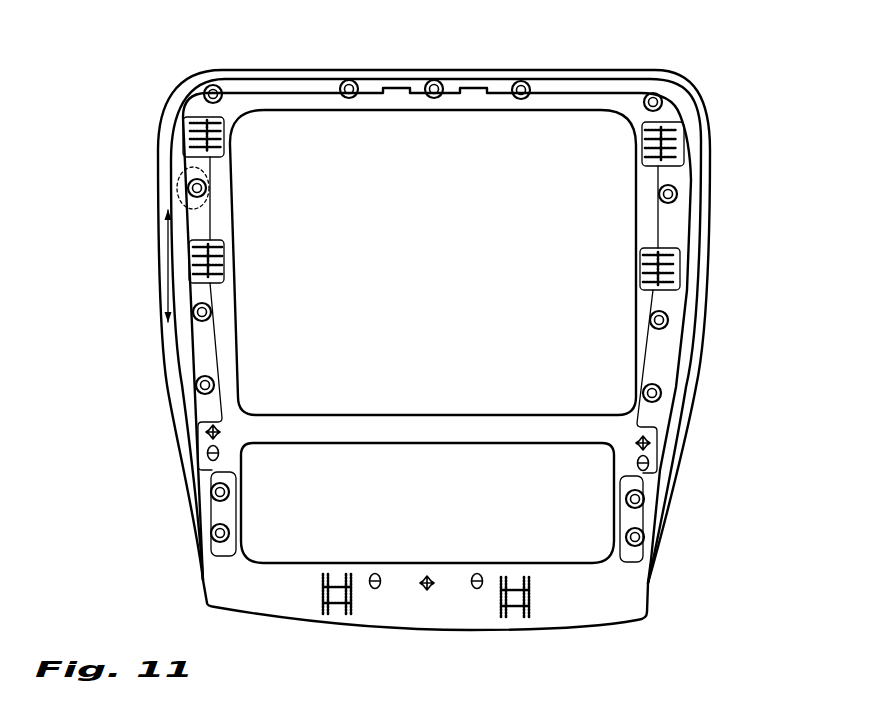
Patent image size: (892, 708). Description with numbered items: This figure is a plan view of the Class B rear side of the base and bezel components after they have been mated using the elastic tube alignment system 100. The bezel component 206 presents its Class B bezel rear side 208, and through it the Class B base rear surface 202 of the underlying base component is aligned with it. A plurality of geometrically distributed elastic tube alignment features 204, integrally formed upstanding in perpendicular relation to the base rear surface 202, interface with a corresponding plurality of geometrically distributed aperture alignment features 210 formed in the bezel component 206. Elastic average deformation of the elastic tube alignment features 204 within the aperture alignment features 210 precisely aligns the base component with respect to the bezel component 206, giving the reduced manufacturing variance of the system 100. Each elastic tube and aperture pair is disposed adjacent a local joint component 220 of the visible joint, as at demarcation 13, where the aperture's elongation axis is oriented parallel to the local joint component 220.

The elastic tube alignment system 100 is at (438, 293).
The Class B base rear surface 202 is at (577, 110).
The elastic tube alignment feature 204 is at (648, 94).
The bezel component 206 is at (699, 404).
The Class B bezel rear side 208 is at (673, 225).
The aperture alignment feature 210 is at (664, 100).
The local joint component 220 is at (163, 294).
The demarcation 13 is at (181, 187).